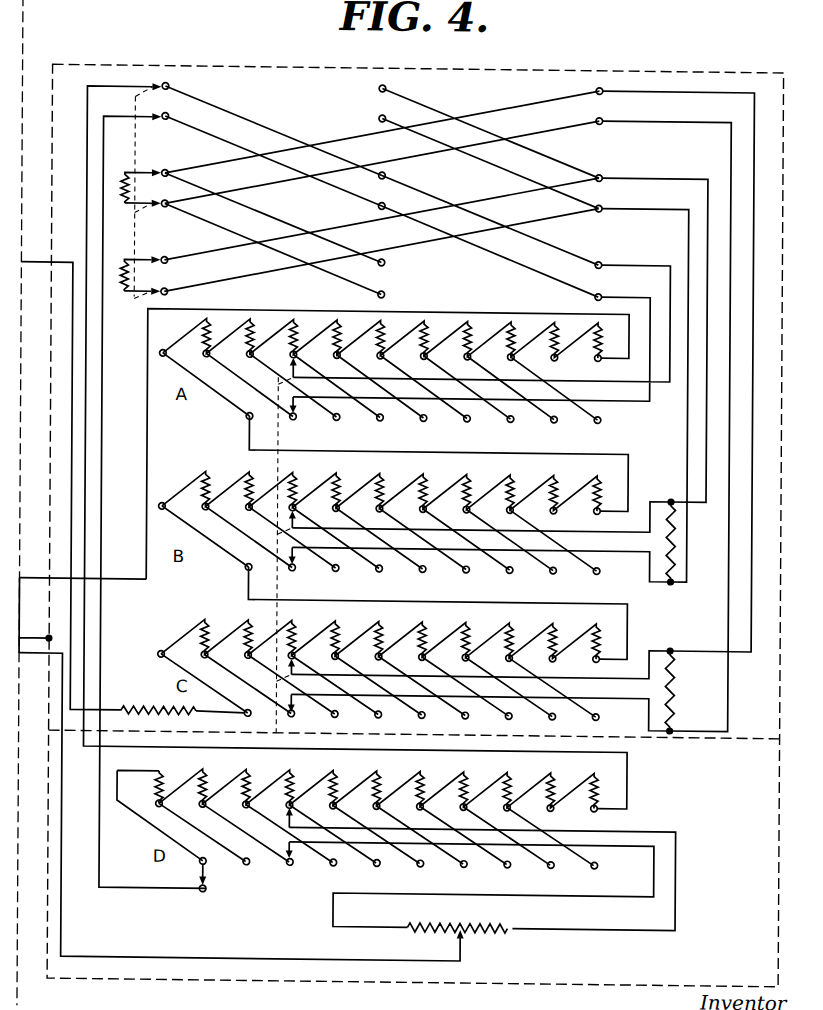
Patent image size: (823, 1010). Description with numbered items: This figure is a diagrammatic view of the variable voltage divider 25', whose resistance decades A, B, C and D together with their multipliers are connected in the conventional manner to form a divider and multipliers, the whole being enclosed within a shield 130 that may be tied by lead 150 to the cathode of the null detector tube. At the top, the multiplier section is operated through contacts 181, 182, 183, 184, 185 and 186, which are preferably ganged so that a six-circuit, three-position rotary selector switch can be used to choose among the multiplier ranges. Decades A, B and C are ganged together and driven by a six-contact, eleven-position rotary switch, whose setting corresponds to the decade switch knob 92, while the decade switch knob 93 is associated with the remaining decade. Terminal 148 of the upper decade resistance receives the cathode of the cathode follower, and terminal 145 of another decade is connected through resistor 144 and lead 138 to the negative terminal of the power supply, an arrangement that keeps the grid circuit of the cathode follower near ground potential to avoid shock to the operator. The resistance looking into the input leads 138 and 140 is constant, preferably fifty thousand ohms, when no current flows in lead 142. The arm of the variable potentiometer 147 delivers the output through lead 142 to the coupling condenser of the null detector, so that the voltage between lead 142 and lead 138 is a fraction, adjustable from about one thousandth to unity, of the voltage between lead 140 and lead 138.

The shield 130 is at (207, 66).
The variable voltage divider 25' is at (374, 174).
The multiplier contact 181 is at (110, 91).
The multiplier contact 182 is at (131, 118).
The multiplier contact 183 is at (133, 176).
The multiplier contact 184 is at (138, 207).
The multiplier contact 185 is at (135, 262).
The multiplier contact 186 is at (133, 293).
The lead 138 is at (35, 265).
The lead 140 is at (28, 583).
The lead 142 is at (37, 660).
The resistor 144 is at (164, 704).
The terminal 145 is at (252, 716).
The variable potentiometer 147 is at (471, 934).
The terminal 148 is at (600, 360).
The lead 150 is at (50, 642).
The control knob 92 is at (277, 437).
The control knob 93 is at (290, 838).